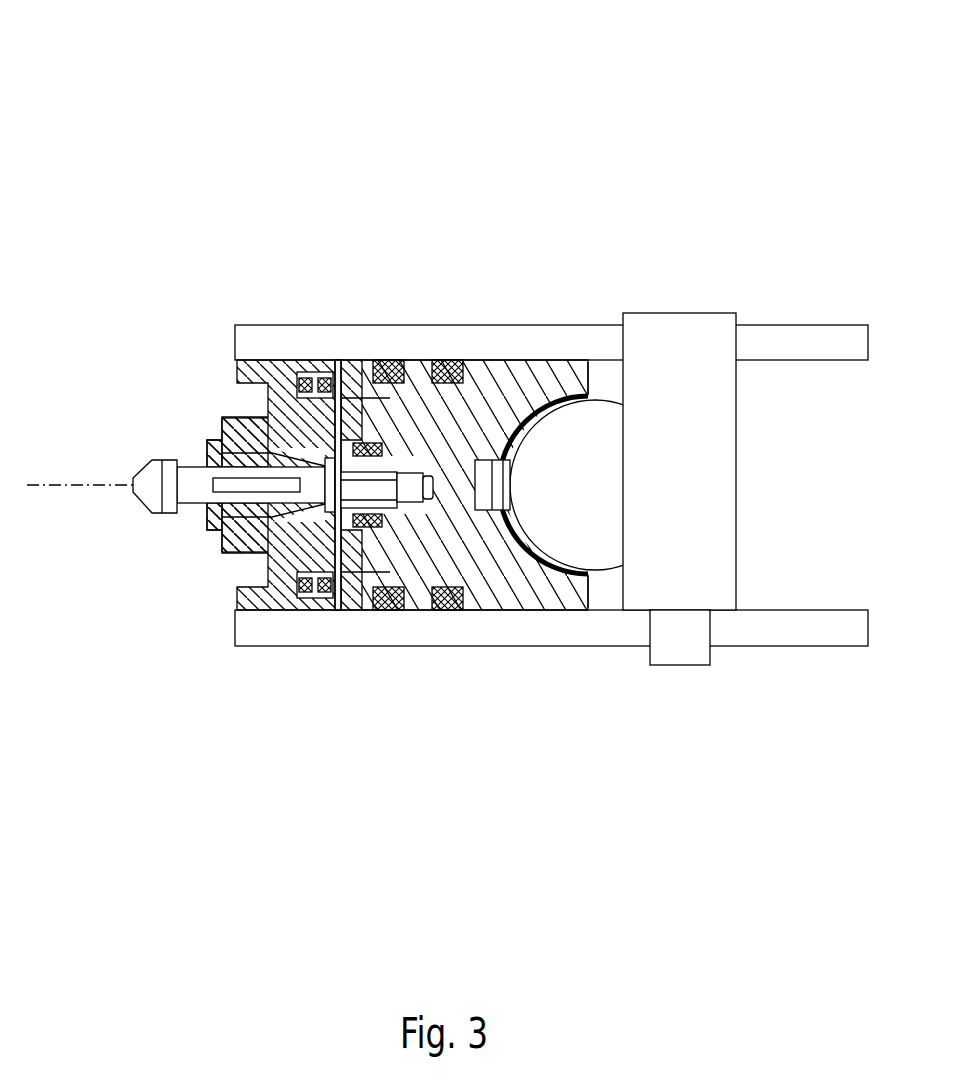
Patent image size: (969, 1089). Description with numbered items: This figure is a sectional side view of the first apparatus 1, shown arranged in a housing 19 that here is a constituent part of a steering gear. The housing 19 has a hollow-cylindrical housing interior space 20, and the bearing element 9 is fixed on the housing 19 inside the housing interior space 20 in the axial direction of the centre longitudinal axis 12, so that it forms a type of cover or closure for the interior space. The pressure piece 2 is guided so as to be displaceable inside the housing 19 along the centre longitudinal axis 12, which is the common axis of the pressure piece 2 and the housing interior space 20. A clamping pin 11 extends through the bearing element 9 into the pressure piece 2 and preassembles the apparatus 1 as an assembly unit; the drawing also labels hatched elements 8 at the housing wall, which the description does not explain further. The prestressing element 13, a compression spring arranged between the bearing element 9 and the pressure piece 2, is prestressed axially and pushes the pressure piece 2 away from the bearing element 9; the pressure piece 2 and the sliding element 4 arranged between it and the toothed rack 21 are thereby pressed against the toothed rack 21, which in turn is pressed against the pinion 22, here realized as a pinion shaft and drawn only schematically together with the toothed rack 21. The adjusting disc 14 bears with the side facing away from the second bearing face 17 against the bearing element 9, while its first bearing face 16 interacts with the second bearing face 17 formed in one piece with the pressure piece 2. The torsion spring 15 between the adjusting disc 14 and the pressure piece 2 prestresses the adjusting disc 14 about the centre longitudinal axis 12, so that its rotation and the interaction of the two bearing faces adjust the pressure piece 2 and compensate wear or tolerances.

The apparatus 1 is at (688, 147).
The pressure piece 2 is at (534, 348).
The sliding element 4 is at (544, 580).
The seals 8 is at (400, 365).
The bearing element 9 is at (254, 352).
The clamping pin 11 is at (143, 447).
The centre longitudinal axis 12 is at (76, 484).
The prestressing element 13 is at (199, 432).
The adjusting disc 14 is at (338, 553).
The torsion spring 15 is at (392, 528).
The first bearing face 16 is at (371, 418).
The second bearing face 17 is at (345, 560).
The housing 19 is at (487, 343).
The housing interior space 20 is at (608, 370).
The toothed rack 21 is at (600, 545).
The pinion 22 is at (720, 497).